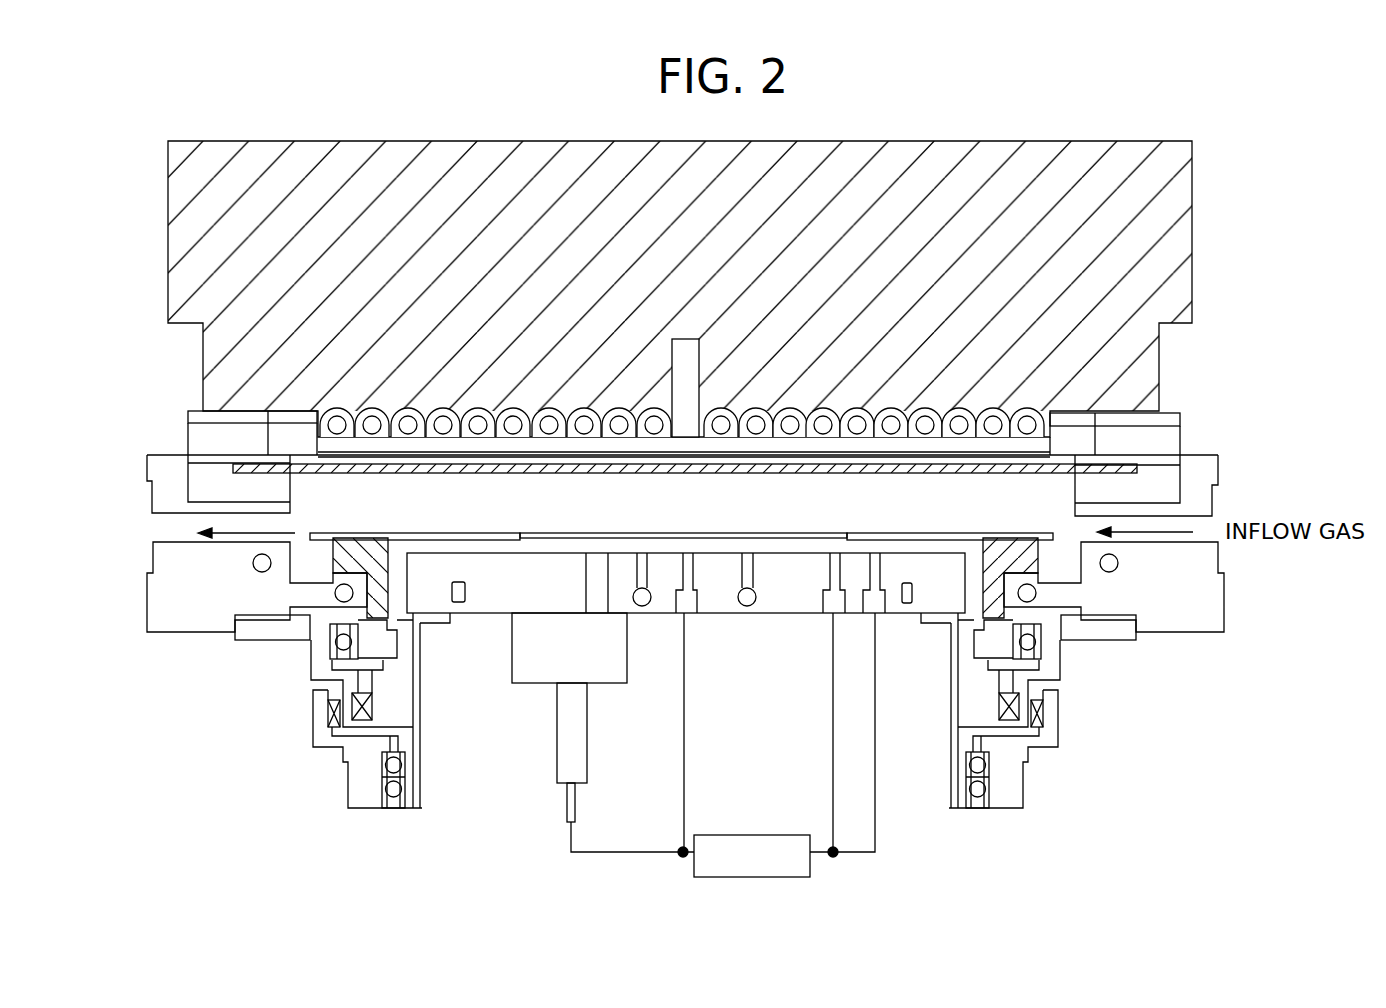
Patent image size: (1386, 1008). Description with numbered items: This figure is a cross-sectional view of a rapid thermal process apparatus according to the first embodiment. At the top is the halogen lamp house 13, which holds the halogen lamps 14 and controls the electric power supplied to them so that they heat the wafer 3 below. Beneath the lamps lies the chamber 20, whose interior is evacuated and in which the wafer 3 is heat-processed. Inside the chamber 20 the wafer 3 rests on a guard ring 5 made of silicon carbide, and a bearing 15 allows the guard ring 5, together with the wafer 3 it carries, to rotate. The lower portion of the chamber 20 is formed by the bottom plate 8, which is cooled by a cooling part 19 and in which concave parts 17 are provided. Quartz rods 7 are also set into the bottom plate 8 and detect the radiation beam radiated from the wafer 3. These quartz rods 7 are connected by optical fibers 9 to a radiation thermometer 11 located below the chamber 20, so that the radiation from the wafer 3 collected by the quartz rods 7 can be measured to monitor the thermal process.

The wafer 3 is at (742, 533).
The guard ring 5 is at (445, 533).
The quartz rods 7 is at (586, 577).
The bottom plate 8 is at (793, 603).
The optical fibers 9 is at (684, 700).
The radiation thermometer 11 is at (810, 868).
The halogen lamp house 13 is at (1192, 163).
The halogen lamps 14 is at (327, 410).
The bearing 15 is at (334, 647).
The concave parts 17 is at (644, 607).
The cooling part 19 is at (335, 593).
The chamber 20 is at (152, 492).